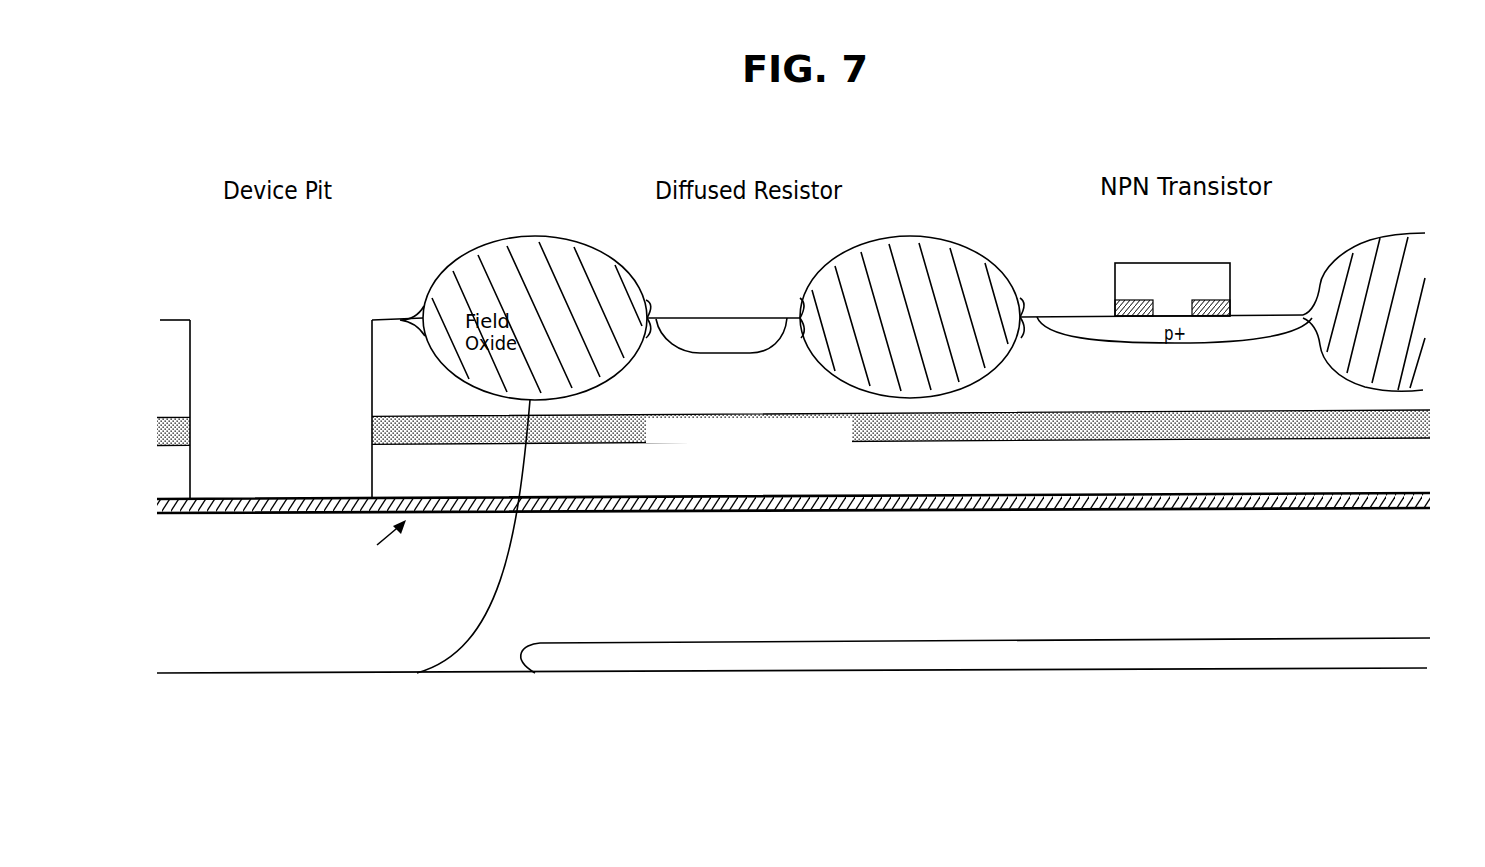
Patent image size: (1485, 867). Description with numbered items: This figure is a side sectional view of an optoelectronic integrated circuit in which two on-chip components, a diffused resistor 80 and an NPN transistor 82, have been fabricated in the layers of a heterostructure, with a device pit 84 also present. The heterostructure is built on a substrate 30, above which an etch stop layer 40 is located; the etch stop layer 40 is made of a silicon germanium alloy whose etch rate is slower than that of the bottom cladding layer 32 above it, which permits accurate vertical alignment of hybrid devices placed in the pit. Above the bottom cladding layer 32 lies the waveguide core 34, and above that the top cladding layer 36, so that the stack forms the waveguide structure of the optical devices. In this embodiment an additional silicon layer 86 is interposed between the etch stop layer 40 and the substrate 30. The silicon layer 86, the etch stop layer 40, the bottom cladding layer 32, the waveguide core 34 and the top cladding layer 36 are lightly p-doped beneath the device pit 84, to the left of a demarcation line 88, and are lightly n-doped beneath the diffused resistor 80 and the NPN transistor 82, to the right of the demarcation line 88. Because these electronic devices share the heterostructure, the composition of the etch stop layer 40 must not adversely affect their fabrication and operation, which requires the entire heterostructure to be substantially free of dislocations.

The substrate 30 is at (1375, 715).
The bottom cladding layer 32 is at (1400, 470).
The waveguide core 34 is at (1413, 422).
The top cladding layer 36 is at (1410, 399).
The etch stop layer 40 is at (1413, 499).
The diffused resistor 80 is at (728, 318).
The NPN transistor 82 is at (1195, 263).
The device pit 84 is at (278, 498).
The silicon layer 86 is at (1397, 572).
The demarcation line 88 is at (472, 635).